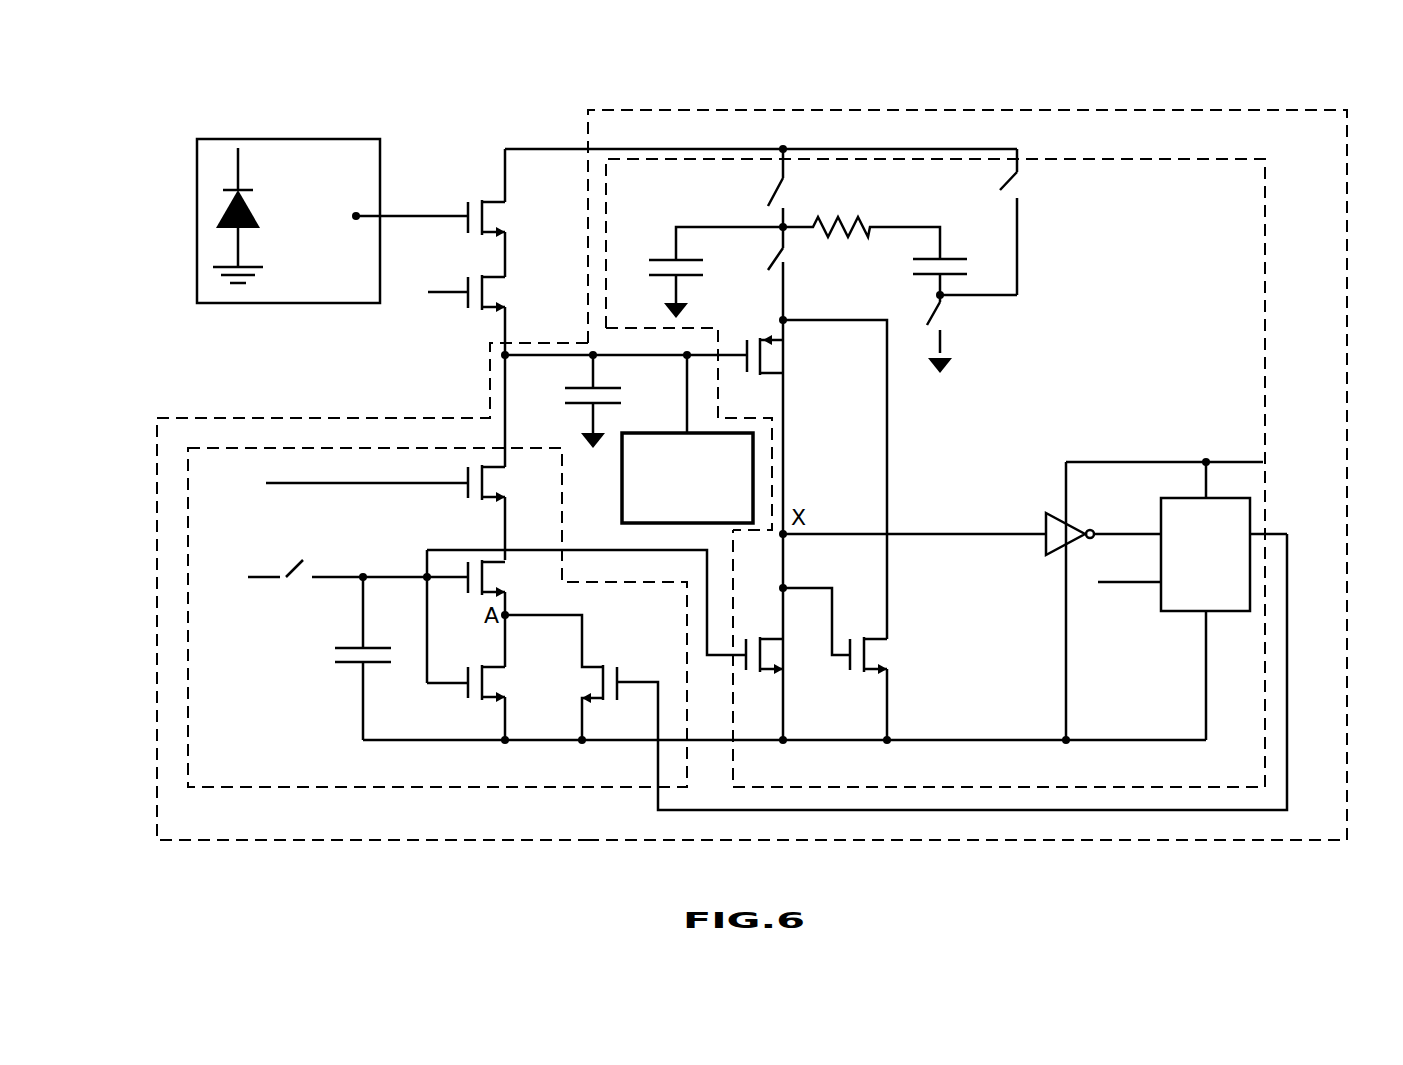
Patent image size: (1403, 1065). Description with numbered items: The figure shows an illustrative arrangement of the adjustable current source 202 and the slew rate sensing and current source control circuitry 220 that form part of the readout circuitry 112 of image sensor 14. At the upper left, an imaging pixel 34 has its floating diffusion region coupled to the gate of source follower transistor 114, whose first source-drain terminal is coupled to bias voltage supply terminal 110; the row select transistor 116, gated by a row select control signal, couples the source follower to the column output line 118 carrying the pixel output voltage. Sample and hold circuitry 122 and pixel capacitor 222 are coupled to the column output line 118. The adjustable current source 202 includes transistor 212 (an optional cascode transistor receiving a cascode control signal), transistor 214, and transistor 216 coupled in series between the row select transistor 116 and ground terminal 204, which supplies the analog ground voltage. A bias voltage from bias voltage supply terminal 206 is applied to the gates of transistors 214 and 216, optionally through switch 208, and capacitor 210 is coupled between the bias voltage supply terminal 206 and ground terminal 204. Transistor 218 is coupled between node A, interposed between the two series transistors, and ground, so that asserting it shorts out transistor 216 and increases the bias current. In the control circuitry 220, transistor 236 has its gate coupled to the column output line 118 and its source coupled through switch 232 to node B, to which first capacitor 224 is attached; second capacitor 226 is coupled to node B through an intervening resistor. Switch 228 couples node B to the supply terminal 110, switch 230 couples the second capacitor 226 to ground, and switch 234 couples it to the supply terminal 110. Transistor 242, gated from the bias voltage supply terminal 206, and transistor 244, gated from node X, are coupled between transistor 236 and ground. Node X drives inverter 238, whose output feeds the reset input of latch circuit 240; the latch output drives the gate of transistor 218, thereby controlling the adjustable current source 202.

The image sensor 14 is at (1082, 86).
The imaging pixel 34 is at (268, 105).
The bias voltage supply terminal 110 is at (910, 148).
The readout circuitry 112 is at (236, 418).
The source follower transistor 114 is at (514, 212).
The row select transistor 116 is at (480, 334).
The column output line 118 is at (508, 335).
The sample and hold circuitry 122 is at (622, 486).
The adjustable current source 202 is at (447, 789).
The bias voltage supply terminal 204 is at (937, 742).
The bias voltage supply terminal 206 is at (284, 570).
The switch 208 is at (290, 588).
The capacitor 210 is at (333, 658).
The transistor 212 is at (470, 457).
The transistor 214 is at (470, 549).
The transistor 216 is at (480, 703).
The transistor 218 is at (590, 660).
The slew rate sensing and current source control circuitry 220 is at (1265, 200).
The pixel capacitor 222 is at (583, 413).
The first capacitor 224 is at (710, 270).
The second capacitor 226 is at (895, 258).
The switch 228 is at (762, 181).
The switch 230 is at (925, 343).
The switch 232 is at (798, 284).
The switch 234 is at (1021, 201).
The transistor 236 is at (790, 362).
The inverter 238 is at (1043, 518).
The latch circuit 240 is at (1180, 498).
The transistor 242 is at (788, 653).
The transistor 244 is at (897, 651).